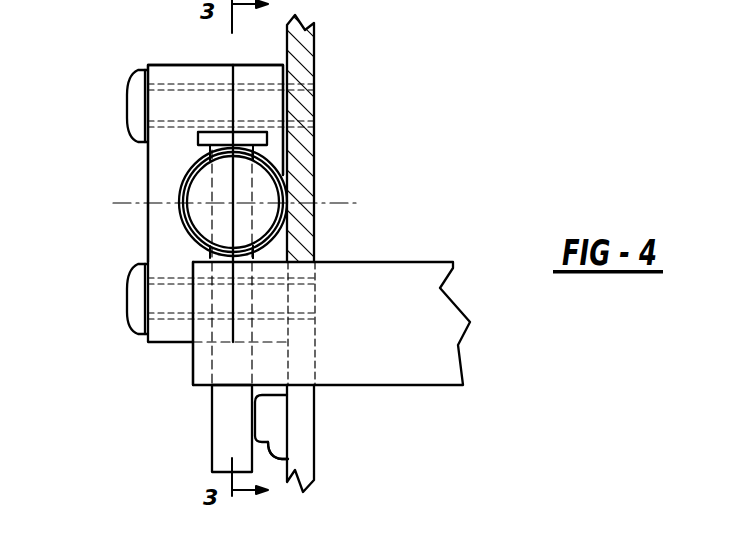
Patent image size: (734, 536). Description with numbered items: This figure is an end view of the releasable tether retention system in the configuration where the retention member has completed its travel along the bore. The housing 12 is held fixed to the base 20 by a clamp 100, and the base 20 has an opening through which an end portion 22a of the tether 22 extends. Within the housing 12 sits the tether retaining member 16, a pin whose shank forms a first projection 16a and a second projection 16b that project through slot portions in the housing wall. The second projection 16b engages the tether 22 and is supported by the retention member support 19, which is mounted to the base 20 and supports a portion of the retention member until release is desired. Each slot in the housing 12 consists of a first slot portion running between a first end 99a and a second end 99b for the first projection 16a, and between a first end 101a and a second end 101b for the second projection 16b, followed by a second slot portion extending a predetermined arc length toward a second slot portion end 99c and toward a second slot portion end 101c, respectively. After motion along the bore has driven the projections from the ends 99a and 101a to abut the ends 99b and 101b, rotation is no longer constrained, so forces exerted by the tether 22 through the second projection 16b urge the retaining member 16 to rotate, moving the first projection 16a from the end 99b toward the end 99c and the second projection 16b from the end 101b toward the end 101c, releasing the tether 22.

The housing 12 is at (183, 195).
The tether retaining member 16 is at (242, 190).
The first projection 16a is at (198, 145).
The second projection 16b is at (233, 424).
The retention member support 19 is at (289, 458).
The base 20 is at (300, 50).
The tether 22 is at (402, 274).
The end portion of the tether 22a is at (197, 372).
The first slot portion first end 99a is at (255, 156).
The first slot portion second end 99b is at (255, 156).
The second slot portion end 99c is at (180, 222).
The clamp 100 is at (166, 335).
The first slot portion first end 101a is at (253, 260).
The first slot portion second end 101b is at (253, 260).
The second slot portion end 101c is at (286, 176).